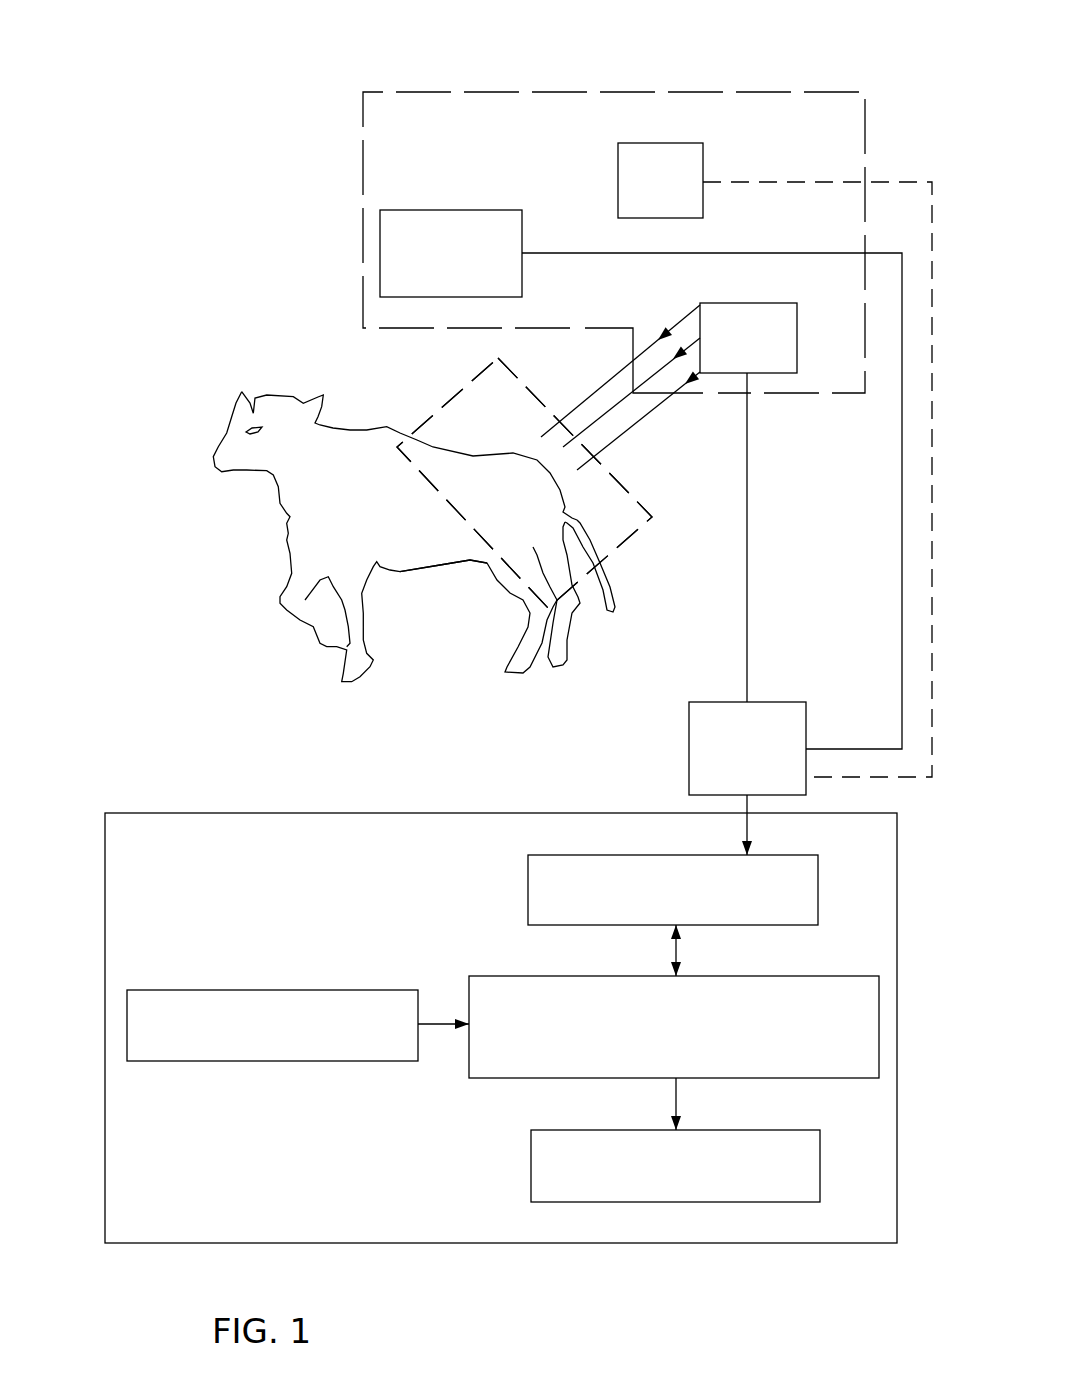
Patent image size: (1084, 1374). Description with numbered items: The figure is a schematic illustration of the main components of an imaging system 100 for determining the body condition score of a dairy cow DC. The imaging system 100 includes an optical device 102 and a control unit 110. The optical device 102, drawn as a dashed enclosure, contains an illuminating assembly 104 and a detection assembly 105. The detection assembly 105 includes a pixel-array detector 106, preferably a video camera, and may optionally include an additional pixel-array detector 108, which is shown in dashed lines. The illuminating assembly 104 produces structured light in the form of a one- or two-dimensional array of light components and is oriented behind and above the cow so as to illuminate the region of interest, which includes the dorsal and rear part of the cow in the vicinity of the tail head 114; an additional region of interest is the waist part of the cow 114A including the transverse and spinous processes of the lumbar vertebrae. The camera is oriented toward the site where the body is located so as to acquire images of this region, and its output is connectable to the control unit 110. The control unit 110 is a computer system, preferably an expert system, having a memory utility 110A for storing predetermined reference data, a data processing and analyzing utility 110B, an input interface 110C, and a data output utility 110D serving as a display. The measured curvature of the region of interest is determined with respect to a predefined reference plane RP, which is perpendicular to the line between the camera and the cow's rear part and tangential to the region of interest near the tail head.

The imaging system 100 is at (255, 308).
The optical device 102 is at (718, 82).
The illuminating assembly 104 is at (746, 305).
The detection assembly 105 is at (398, 188).
The pixel-array detector 106 is at (453, 210).
The additional pixel-array detector 108 is at (660, 143).
The control unit 110 is at (798, 700).
The memory utility 110A is at (528, 892).
The data processing and analyzing utility 110B is at (783, 976).
The input interface 110C is at (270, 990).
The data output utility 110D is at (531, 1167).
The tail head 114 is at (512, 487).
The waist part of the cow 114A is at (418, 440).
The reference plane RP is at (623, 547).
The dairy cow DC is at (417, 530).